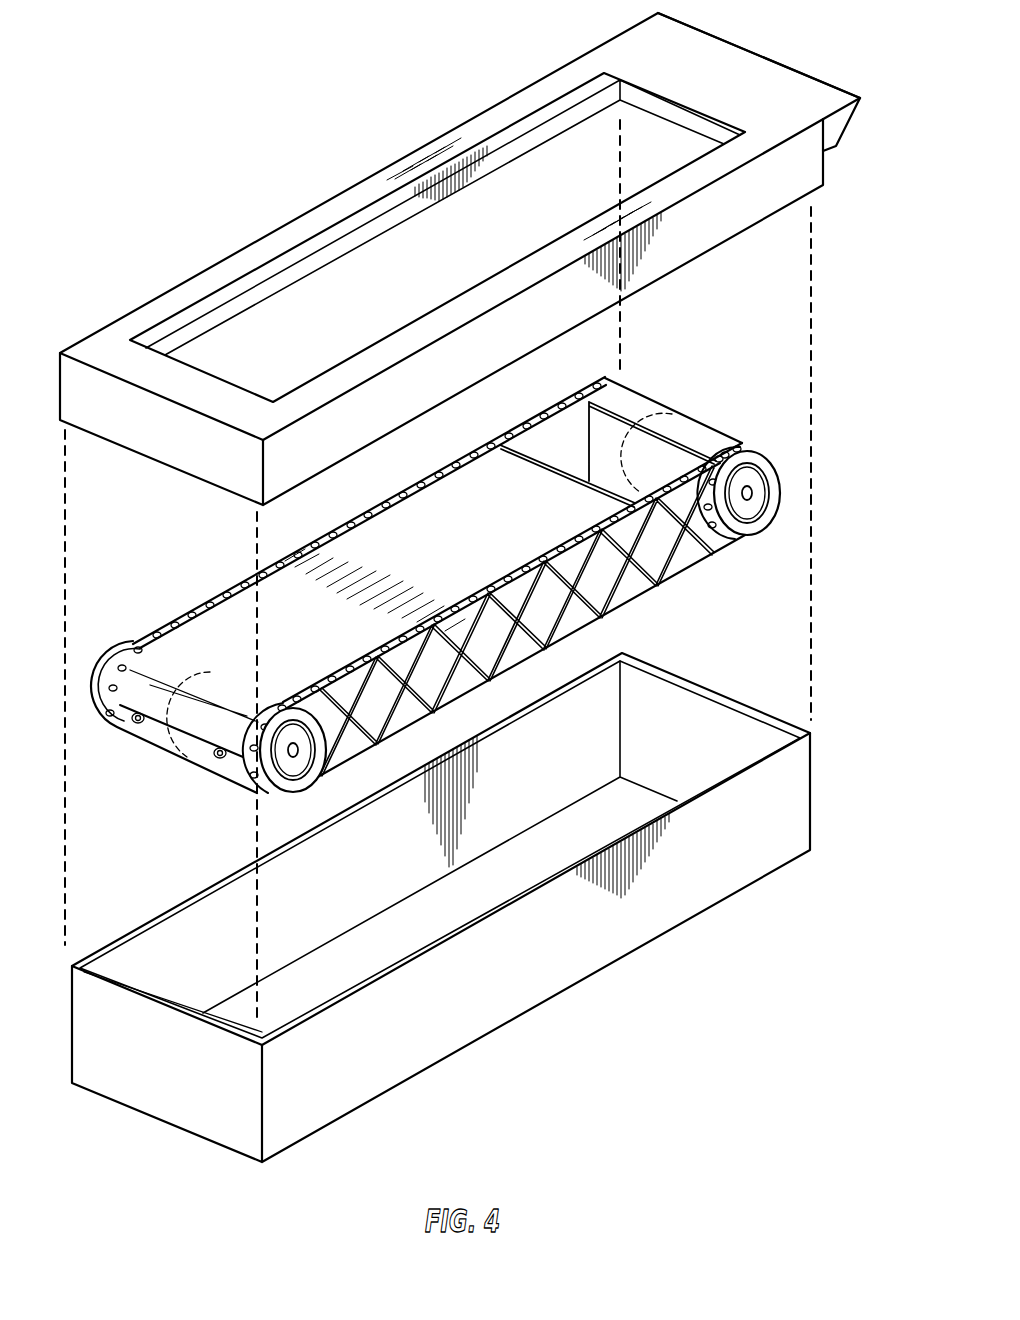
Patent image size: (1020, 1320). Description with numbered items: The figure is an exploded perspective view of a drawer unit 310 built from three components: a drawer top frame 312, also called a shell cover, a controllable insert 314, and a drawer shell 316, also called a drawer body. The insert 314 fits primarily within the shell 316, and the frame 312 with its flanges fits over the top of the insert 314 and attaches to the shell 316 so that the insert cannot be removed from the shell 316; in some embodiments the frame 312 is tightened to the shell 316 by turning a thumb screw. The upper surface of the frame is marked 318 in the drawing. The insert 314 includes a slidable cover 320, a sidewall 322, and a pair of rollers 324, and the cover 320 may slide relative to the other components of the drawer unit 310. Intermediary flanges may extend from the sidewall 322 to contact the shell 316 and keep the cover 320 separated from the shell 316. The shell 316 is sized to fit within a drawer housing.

The drawer unit 310 is at (268, 122).
The drawer top frame 312 is at (108, 348).
The controllable insert 314 is at (216, 636).
The drawer shell 316 is at (515, 996).
The frame upper surface 318 is at (793, 83).
The slidable cover 320 is at (367, 550).
The sidewall 322 is at (653, 557).
The rollers 324 is at (772, 462).